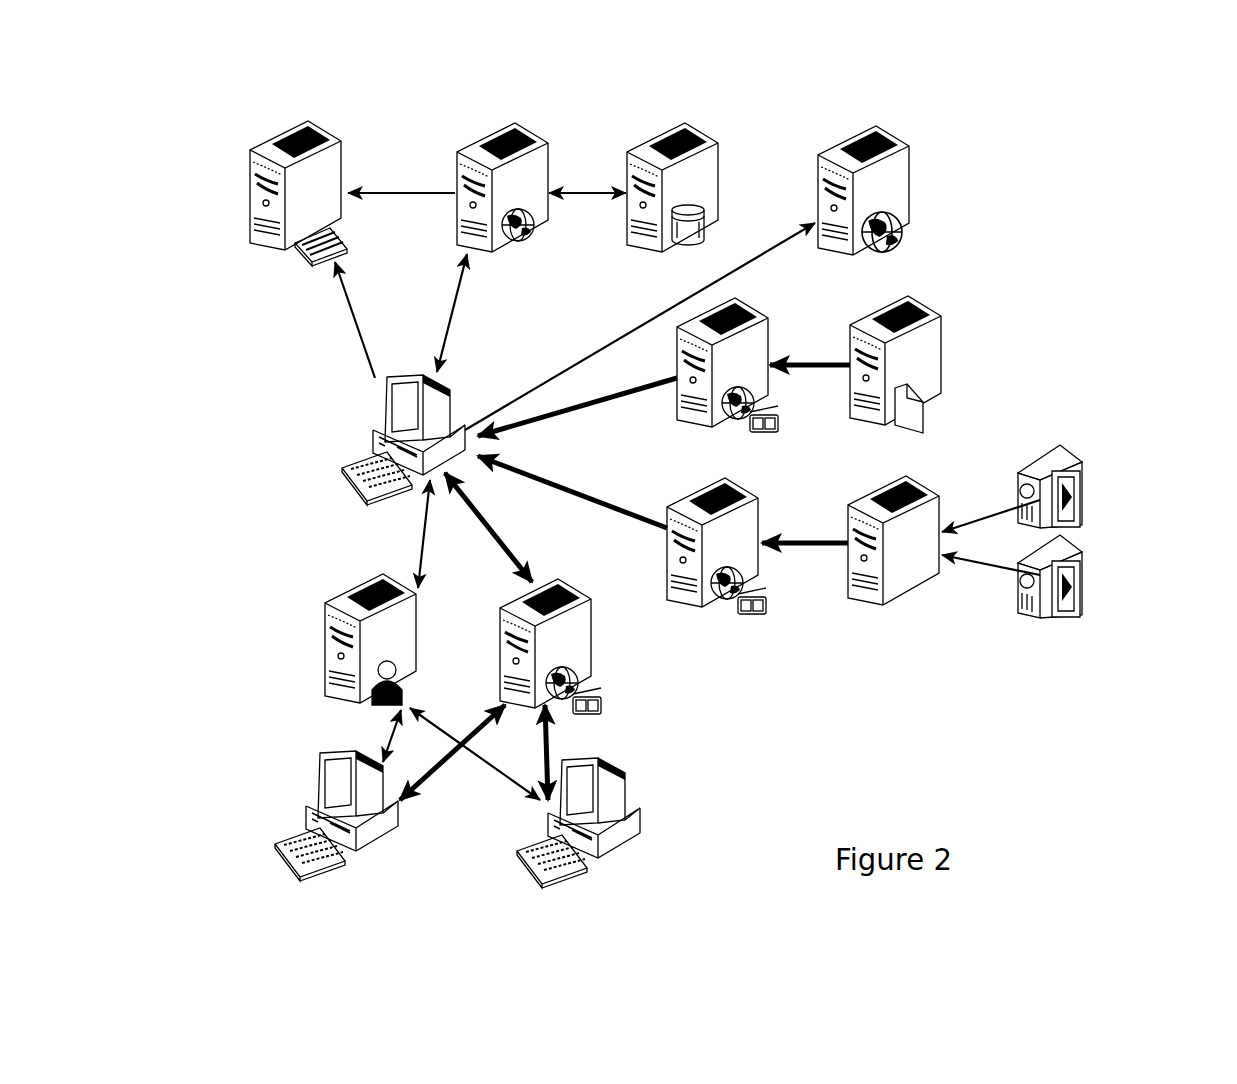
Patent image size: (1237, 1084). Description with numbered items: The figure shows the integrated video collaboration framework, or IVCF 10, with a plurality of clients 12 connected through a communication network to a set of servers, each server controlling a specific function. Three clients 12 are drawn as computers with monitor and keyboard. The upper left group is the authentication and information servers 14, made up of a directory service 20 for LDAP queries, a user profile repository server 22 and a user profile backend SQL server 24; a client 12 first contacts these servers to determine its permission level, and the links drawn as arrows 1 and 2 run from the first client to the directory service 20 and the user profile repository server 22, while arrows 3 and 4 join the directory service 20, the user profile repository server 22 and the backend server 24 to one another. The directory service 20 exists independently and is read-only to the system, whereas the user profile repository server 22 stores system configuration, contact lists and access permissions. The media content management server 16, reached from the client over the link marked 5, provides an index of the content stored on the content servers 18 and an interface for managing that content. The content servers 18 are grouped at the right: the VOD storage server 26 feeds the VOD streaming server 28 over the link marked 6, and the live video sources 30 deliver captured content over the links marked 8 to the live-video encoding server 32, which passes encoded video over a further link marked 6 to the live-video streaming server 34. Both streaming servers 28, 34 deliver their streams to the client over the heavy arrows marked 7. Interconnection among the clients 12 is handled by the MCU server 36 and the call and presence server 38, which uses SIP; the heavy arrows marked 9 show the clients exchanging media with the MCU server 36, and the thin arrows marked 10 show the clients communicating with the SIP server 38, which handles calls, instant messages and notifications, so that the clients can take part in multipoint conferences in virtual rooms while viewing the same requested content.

The client 12 is at (343, 355).
The authentication and information servers 14 is at (230, 130).
The media content management server 16 is at (1010, 87).
The content servers 18 is at (1075, 268).
The directory service 20 is at (253, 240).
The user profile repository server 22 is at (542, 220).
The user profile backend SQL server 24 is at (718, 177).
The VOD storage server 26 is at (942, 370).
The VOD streaming server 28 is at (762, 333).
The live video sources 30 is at (1082, 485).
The live-video encoding server 32 is at (895, 605).
The live-video streaming server 34 is at (708, 605).
The MCU server 36 is at (597, 650).
The call and presence server 38 is at (323, 648).
The directory lookup communication path 1 is at (355, 320).
The user profile communication path 2 is at (453, 313).
The directory to profile server link 3 is at (401, 181).
The profile server to backend link 4 is at (587, 181).
The media content management link 5 is at (640, 326).
The storage/encoder to streaming server link 6 is at (806, 442).
The video stream to client path 7 is at (577, 453).
The live video source feed 8 is at (991, 537).
The MCU media path 9 is at (487, 636).
The integrated video collaboration framework (IVCF) 10 is at (452, 640).